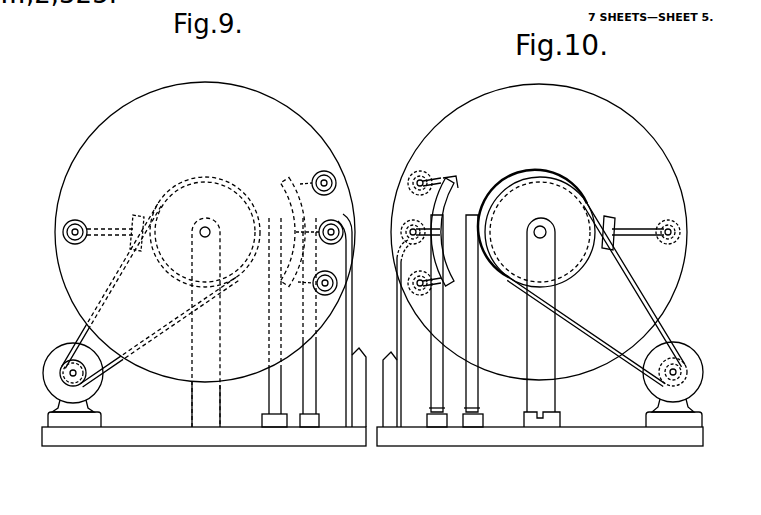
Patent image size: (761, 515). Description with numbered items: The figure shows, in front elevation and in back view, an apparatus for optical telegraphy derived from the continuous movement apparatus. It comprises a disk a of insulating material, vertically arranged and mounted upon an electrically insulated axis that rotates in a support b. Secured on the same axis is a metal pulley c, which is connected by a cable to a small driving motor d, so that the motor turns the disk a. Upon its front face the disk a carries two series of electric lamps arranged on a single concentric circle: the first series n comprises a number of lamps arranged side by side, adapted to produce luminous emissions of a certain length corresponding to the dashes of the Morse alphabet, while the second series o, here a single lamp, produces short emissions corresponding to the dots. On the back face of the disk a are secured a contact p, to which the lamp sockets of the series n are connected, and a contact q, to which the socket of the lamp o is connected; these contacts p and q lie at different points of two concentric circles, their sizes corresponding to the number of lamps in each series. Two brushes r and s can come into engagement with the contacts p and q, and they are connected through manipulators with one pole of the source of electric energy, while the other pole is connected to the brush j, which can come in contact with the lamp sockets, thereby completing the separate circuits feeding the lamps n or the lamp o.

In FIG. 9, the disk a is at (207, 226).
In FIG. 10, the disk a is at (539, 226).
In FIG. 9, the support b is at (193, 397).
In FIG. 10, the support b is at (560, 392).
In FIG. 9, the metal pulley c is at (174, 262).
In FIG. 10, the metal pulley c is at (564, 186).
In FIG. 9, the driving motor d is at (44, 373).
In FIG. 10, the driving motor d is at (703, 374).
In FIG. 9, the brush j is at (354, 331).
In FIG. 10, the brush j is at (395, 325).
In FIG. 9, the first series of lamps n is at (334, 180).
In FIG. 10, the first series of lamps n is at (410, 178).
In FIG. 9, the second series of lamps o is at (76, 221).
In FIG. 10, the second series of lamps o is at (682, 232).
In FIG. 9, the contact p is at (296, 183).
In FIG. 10, the contact p is at (453, 184).
In FIG. 9, the contact q is at (135, 214).
In FIG. 10, the contact q is at (612, 220).
In FIG. 9, the brush r is at (310, 372).
In FIG. 10, the brush r is at (433, 378).
In FIG. 9, the brush s is at (271, 398).
In FIG. 10, the brush s is at (479, 388).